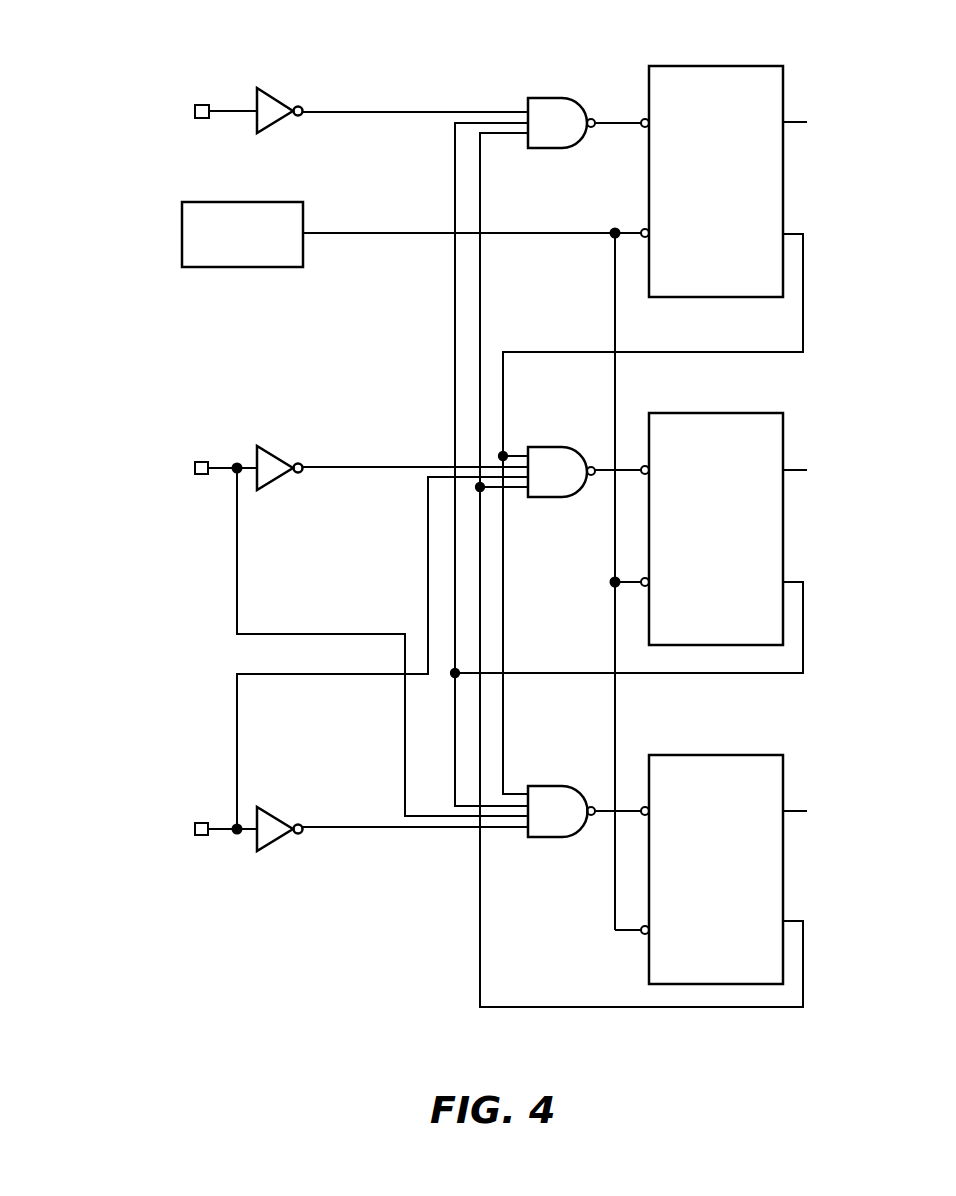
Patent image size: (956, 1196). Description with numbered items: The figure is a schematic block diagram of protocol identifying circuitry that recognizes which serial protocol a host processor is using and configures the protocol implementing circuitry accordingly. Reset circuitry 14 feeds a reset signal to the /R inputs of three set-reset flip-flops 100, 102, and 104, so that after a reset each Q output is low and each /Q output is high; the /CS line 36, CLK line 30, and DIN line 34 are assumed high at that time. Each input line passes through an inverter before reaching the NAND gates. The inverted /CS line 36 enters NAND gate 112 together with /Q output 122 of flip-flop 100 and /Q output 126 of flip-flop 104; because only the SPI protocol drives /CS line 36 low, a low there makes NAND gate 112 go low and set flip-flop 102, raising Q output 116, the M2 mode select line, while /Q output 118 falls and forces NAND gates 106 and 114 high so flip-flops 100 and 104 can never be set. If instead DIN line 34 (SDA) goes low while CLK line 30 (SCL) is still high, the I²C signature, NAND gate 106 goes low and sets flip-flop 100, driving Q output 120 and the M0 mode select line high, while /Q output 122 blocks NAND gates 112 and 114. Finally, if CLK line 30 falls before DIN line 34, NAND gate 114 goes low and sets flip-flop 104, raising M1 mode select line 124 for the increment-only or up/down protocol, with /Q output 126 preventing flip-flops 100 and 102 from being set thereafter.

The /CS line 36 is at (220, 110).
The reset circuitry 14 is at (283, 202).
The CLK line 30 is at (222, 465).
The DIN line 34 is at (227, 827).
The NAND gate 112 is at (538, 97).
The NAND gate 114 is at (537, 447).
The NAND gate 106 is at (533, 785).
The flip-flop 102 is at (703, 65).
The flip-flop 104 is at (773, 413).
The flip-flop 100 is at (763, 753).
The Q output 116 is at (792, 122).
The /Q output 118 is at (792, 233).
The M1 mode select line 124 is at (785, 468).
The /Q output 126 is at (785, 580).
The Q output 120 is at (790, 810).
The /Q output 122 is at (790, 920).